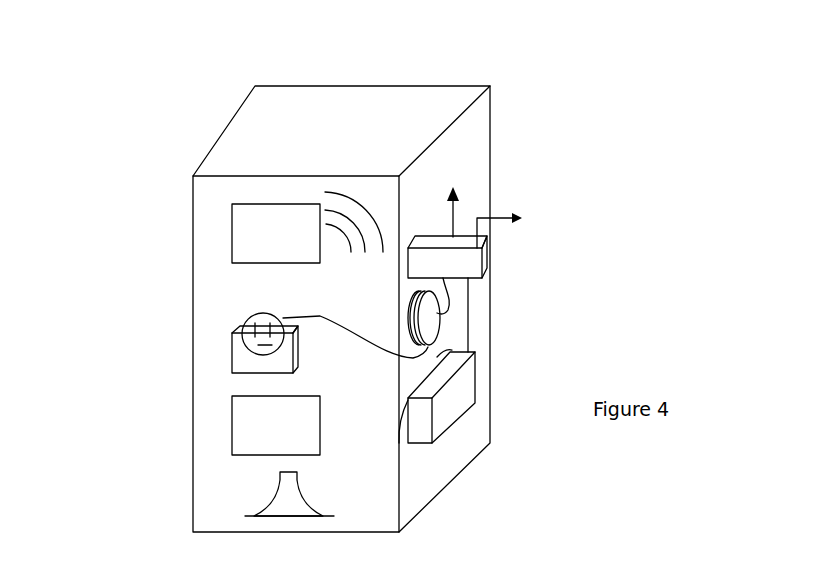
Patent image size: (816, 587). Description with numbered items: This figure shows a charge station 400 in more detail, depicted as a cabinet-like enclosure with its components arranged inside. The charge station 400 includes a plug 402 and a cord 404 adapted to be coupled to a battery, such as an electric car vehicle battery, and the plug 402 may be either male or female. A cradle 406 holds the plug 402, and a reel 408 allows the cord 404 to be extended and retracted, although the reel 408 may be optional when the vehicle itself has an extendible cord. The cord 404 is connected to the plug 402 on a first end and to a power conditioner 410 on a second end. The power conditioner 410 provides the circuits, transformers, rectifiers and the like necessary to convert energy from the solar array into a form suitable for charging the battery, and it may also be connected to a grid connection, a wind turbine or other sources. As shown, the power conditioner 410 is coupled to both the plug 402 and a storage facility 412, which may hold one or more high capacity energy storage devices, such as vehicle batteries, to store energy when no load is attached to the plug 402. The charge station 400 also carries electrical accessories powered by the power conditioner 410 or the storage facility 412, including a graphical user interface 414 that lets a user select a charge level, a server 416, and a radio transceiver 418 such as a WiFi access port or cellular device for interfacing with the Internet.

The charge station 400 is at (60, 110).
The plug 402 is at (270, 311).
The cord 404 is at (310, 313).
The cradle 406 is at (250, 374).
The reel 408 is at (433, 323).
The power conditioner 410 is at (484, 261).
The storage facility 412 is at (420, 447).
The graphical user interface 414 is at (250, 456).
The server 416 is at (298, 522).
The radio transceiver 418 is at (232, 228).